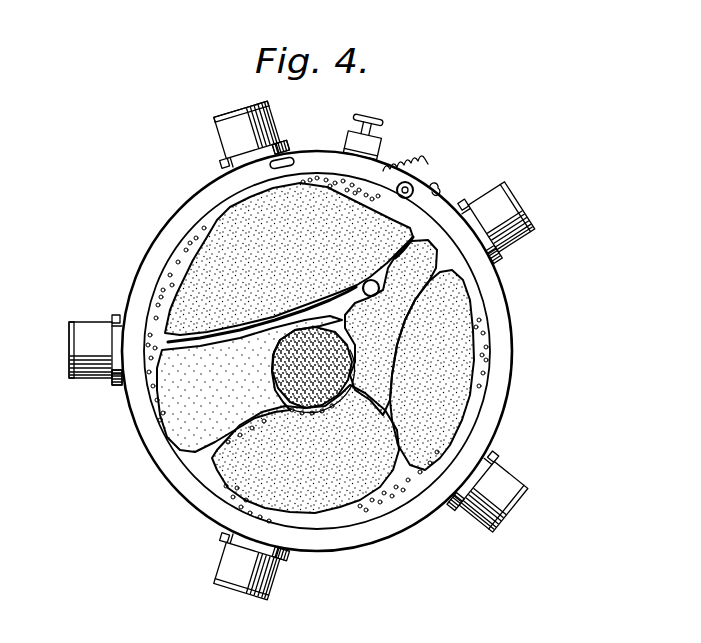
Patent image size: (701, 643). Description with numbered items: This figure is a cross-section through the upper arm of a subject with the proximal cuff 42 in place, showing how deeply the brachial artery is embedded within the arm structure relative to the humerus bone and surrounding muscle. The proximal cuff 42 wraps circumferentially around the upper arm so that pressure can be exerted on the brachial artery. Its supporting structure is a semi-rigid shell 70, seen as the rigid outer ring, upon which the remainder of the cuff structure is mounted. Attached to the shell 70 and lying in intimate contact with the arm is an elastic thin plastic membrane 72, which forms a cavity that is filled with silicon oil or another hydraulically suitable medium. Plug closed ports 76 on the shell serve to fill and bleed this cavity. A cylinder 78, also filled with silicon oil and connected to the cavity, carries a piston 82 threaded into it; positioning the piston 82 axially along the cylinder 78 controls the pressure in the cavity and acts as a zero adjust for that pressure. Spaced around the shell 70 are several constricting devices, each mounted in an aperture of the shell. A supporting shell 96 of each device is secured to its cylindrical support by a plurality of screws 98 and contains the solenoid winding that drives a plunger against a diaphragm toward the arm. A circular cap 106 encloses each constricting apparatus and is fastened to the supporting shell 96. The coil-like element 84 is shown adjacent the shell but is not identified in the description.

The proximal cuff 42 is at (136, 219).
The semi-rigid shell 70 is at (504, 378).
The elastic thin plastic membrane 72 is at (186, 463).
The plug closed ports 76 is at (399, 186).
The cylinder 78 is at (380, 144).
The piston 82 is at (378, 121).
The spring 84 is at (414, 174).
The supporting shell 96 is at (229, 141).
The screws 98 is at (283, 143).
The circular cap 106 is at (237, 114).